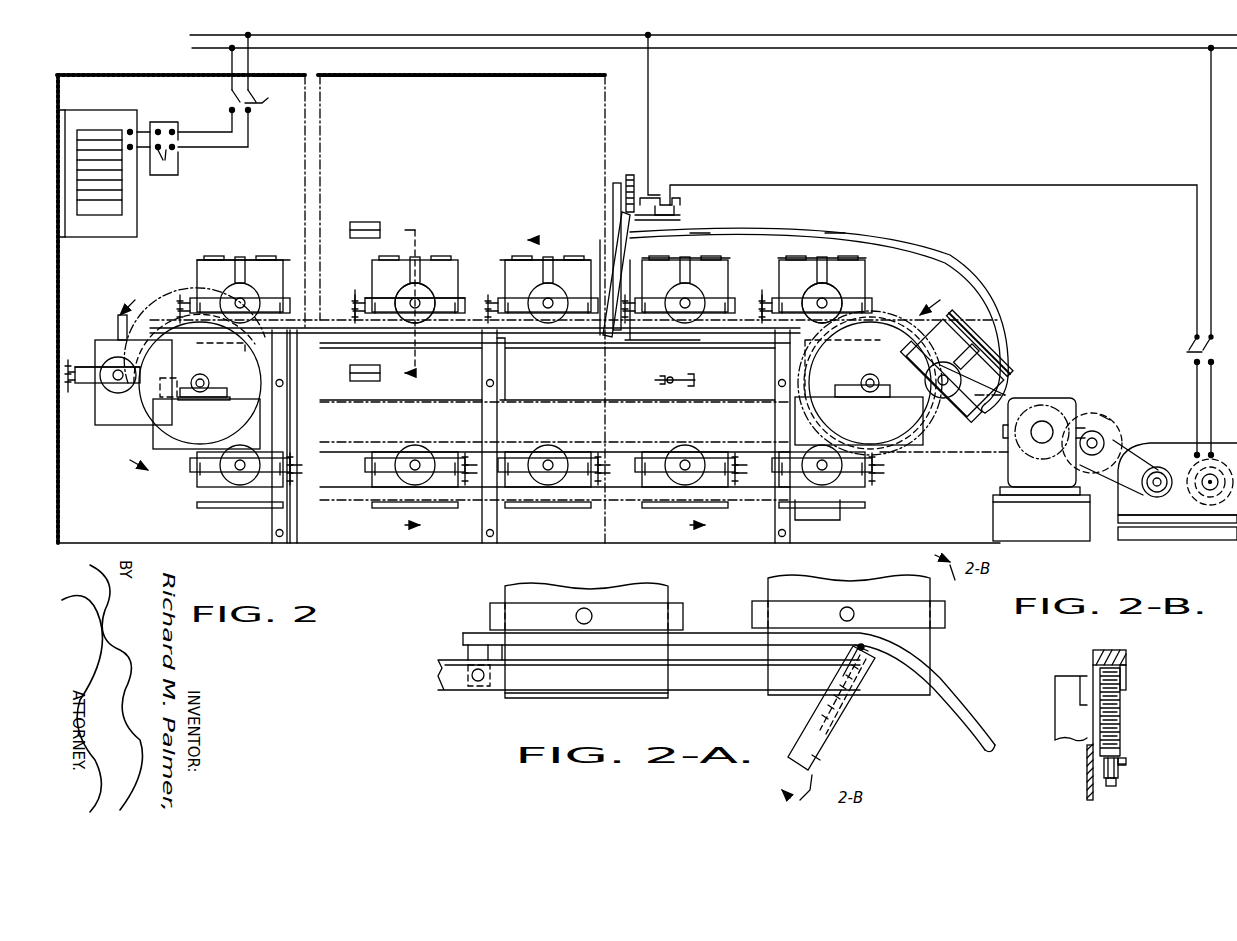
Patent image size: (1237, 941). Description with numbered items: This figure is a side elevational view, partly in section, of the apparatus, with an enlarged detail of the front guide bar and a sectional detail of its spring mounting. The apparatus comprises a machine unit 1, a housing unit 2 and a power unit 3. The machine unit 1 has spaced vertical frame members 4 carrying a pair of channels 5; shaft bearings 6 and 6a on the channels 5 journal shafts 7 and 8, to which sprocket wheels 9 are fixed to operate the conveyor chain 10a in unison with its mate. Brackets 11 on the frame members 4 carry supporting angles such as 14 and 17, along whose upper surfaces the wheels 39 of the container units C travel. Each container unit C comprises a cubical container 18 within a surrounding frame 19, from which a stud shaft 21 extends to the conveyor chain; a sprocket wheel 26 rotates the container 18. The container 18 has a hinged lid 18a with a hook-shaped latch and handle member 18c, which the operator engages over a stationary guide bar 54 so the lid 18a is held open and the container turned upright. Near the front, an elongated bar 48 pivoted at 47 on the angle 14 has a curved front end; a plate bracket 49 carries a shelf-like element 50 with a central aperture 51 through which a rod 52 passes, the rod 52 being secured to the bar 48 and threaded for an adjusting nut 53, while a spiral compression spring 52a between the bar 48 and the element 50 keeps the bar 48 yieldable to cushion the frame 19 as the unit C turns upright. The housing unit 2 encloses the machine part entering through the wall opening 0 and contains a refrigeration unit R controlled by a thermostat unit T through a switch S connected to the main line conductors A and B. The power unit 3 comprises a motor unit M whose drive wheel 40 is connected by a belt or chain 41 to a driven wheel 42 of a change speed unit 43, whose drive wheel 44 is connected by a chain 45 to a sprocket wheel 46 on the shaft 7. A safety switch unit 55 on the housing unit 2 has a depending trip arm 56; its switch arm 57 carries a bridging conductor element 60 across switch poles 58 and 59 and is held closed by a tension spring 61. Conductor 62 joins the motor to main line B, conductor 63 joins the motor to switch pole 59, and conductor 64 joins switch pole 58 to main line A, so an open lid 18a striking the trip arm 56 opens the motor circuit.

In FIG. 2, the main line conductor A is at (190, 36).
In FIG. 2, the main line conductor B is at (192, 48).
In FIG. 2, the switch S is at (258, 100).
In FIG. 2, the thermostat unit T is at (178, 174).
In FIG. 2, the refrigeration unit R is at (137, 230).
In FIG. 2, the housing unit 2 is at (60, 262).
In FIG. 2, the machine unit 1 is at (495, 203).
In FIG. 2, the container unit C is at (192, 275).
In FIG. 2, the wall opening 0 is at (605, 300).
In FIG. 2, the container 18 is at (272, 268).
In FIG. 2-A, the container 18 is at (520, 592).
In FIG. 2, the lid 18a is at (712, 262).
In FIG. 2, the hook-shaped latch and handle member 18c is at (240, 260).
In FIG. 2, the container surrounding frame 19 is at (448, 300).
In FIG. 2-A, the container surrounding frame 19 is at (525, 618).
In FIG. 2, the wheel 39 is at (400, 300).
In FIG. 2, the sprocket wheel 26 is at (355, 297).
In FIG. 2, the conveyor chain 10a is at (468, 343).
In FIG. 2, the bracket 11 is at (505, 358).
In FIG. 2, the supporting angle 14 is at (630, 340).
In FIG. 2-A, the supporting angle 14 is at (460, 690).
In FIG. 2-B, the supporting angle 14 is at (1072, 740).
In FIG. 2, the channel 5 is at (550, 418).
In FIG. 2, the vertical frame member 4 is at (272, 528).
In FIG. 2, the shaft bearing 6a is at (208, 378).
In FIG. 2, the shaft bearing 6 is at (855, 372).
In FIG. 2, the shaft 7 is at (866, 392).
In FIG. 2, the shaft 8 is at (200, 395).
In FIG. 2, the sprocket wheel 9 is at (255, 418).
In FIG. 2, the supporting angle 17 is at (822, 498).
In FIG. 2, the sprocket wheel 46 is at (908, 455).
In FIG. 2, the elongated bar 48 is at (875, 340).
In FIG. 2-A, the elongated bar 48 is at (710, 636).
In FIG. 2-B, the elongated bar 48 is at (1115, 650).
In FIG. 2, the stationary guide bar 54 is at (945, 255).
In FIG. 2, the electrical switch unit 55 is at (612, 190).
In FIG. 2, the trip arm 56 is at (632, 255).
In FIG. 2, the switch arm 57 is at (690, 218).
In FIG. 2, the switch pole 58 is at (652, 225).
In FIG. 2, the switch pole 59 is at (675, 208).
In FIG. 2, the bridging conductor element 60 is at (657, 198).
In FIG. 2, the tension spring 61 is at (650, 200).
In FIG. 2, the conductor 62 is at (1211, 125).
In FIG. 2, the conductor 63 is at (1095, 185).
In FIG. 2, the conductor 64 is at (655, 108).
In FIG. 2, the drive wheel 44 is at (1025, 400).
In FIG. 2, the chain 45 is at (985, 395).
In FIG. 2, the change speed unit 43 is at (1050, 480).
In FIG. 2, the driven wheel 42 is at (1085, 418).
In FIG. 2, the belt or chain 41 is at (1132, 448).
In FIG. 2, the drive wheel 40 is at (1150, 505).
In FIG. 2, the motor unit M is at (1180, 530).
In FIG. 2, the power unit 3 is at (1170, 415).
In FIG. 2-A, the stud shaft 21 is at (592, 610).
In FIG. 2-A, the pivot 47 is at (478, 685).
In FIG. 2-A, the plate bracket 49 is at (845, 718).
In FIG. 2-B, the plate bracket 49 is at (1085, 790).
In FIG. 2-A, the shelf-like element 50 is at (810, 718).
In FIG. 2-B, the shelf-like element 50 is at (1122, 760).
In FIG. 2-B, the central aperture 51 is at (1128, 763).
In FIG. 2-A, the rod 52 is at (862, 655).
In FIG. 2-B, the rod 52 is at (1112, 788).
In FIG. 2-A, the spiral compression spring 52a is at (840, 676).
In FIG. 2-B, the spiral compression spring 52a is at (1118, 718).
In FIG. 2-A, the adjusting nut 53 is at (820, 755).
In FIG. 2-B, the adjusting nut 53 is at (1105, 770).